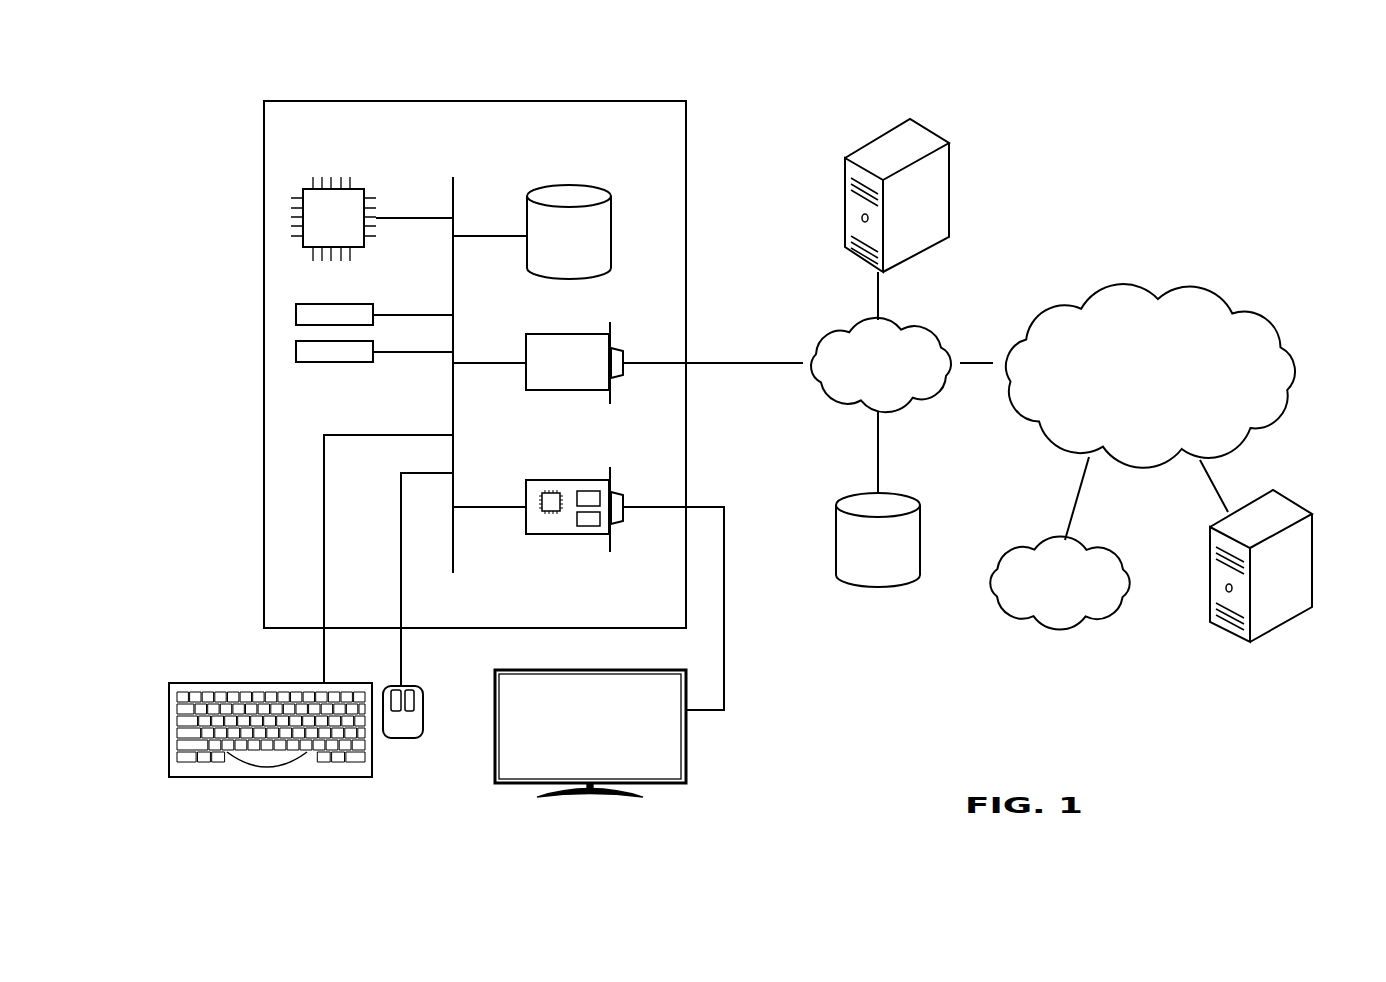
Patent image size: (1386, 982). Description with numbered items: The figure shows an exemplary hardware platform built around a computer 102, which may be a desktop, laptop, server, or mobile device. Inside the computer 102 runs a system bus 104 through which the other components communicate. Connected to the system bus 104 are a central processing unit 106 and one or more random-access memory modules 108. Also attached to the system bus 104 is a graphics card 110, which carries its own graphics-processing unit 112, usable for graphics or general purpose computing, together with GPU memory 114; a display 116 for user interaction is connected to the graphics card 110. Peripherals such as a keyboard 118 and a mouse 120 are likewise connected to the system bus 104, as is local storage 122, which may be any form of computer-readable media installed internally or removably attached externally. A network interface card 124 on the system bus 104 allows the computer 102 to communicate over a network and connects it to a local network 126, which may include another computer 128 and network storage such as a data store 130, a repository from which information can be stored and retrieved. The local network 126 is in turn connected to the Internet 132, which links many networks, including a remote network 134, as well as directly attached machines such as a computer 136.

The computer 102 is at (640, 101).
The system bus 104 is at (457, 190).
The central processing unit 106 is at (357, 188).
The memory 108 is at (375, 312).
The graphics card 110 is at (525, 492).
The graphics-processing unit 112 is at (551, 511).
The GPU memory 114 is at (585, 527).
The display 116 is at (686, 763).
The keyboard 118 is at (273, 777).
The mouse 120 is at (398, 738).
The local storage 122 is at (612, 218).
The network interface card 124 is at (525, 347).
The local network 126 is at (930, 320).
The computer 128 is at (934, 129).
The data store 130 is at (915, 493).
The Internet 132 is at (1193, 282).
The remote network 134 is at (1113, 538).
The computer 136 is at (1287, 490).